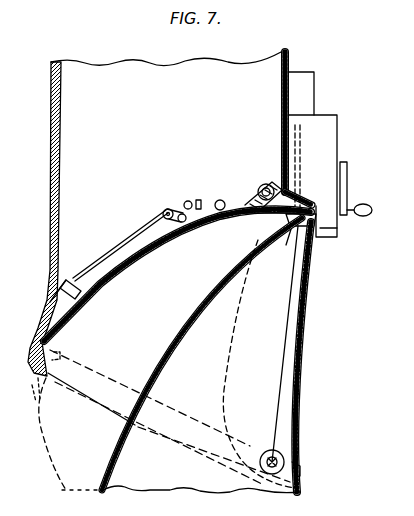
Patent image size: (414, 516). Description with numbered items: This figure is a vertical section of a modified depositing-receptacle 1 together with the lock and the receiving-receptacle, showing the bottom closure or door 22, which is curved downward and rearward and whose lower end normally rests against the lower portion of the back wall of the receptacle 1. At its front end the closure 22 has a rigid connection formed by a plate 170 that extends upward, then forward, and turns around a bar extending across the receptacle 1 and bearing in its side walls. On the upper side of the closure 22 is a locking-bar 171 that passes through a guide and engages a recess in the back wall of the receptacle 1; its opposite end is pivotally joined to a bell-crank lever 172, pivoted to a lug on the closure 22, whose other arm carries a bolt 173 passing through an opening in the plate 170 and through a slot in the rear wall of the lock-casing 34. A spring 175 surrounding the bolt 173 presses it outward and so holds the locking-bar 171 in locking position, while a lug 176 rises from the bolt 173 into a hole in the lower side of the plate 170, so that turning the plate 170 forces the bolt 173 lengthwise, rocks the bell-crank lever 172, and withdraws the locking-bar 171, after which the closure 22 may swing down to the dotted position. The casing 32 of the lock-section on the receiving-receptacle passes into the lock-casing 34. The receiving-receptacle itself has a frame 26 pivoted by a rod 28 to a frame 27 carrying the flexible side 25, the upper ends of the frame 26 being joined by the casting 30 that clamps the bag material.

The receptacle 1 is at (127, 219).
The lock-casing 34 is at (306, 96).
The casing 32 is at (326, 148).
The bottom closure 22 is at (150, 241).
The locking-bar 171 is at (134, 242).
The bell-crank lever 172 is at (176, 197).
The bolt 173 is at (218, 200).
The plate 170 is at (259, 190).
The spring 175 is at (236, 215).
The lug 176 is at (260, 250).
The casting 30 is at (301, 241).
The frame 27 is at (302, 347).
The frame 26 is at (278, 380).
The rod 28 is at (280, 460).
The flexible side 25 is at (300, 492).